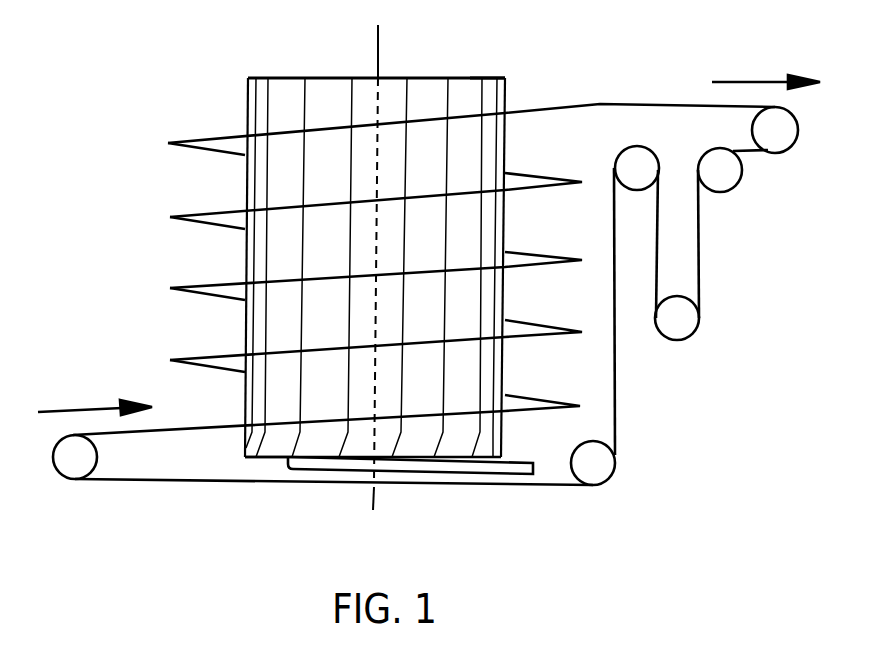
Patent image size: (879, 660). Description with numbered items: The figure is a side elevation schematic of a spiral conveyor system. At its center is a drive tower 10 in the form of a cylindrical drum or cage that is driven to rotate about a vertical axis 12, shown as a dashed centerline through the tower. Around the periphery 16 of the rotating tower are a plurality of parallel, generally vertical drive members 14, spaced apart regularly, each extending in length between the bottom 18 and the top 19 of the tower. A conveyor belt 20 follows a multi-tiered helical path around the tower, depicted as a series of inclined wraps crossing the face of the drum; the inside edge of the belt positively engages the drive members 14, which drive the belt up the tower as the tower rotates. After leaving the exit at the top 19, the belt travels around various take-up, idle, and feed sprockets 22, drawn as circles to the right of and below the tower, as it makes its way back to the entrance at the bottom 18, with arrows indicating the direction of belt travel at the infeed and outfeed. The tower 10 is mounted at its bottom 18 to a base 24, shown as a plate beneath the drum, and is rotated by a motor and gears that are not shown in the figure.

The drive tower 10 is at (427, 87).
The vertical axis 12 is at (377, 42).
The drive members 14 is at (303, 88).
The periphery 16 is at (490, 149).
The bottom 18 is at (272, 458).
The top 19 is at (492, 78).
The conveyor belt 20 is at (212, 137).
The sprockets 22 is at (620, 152).
The base 24 is at (463, 468).